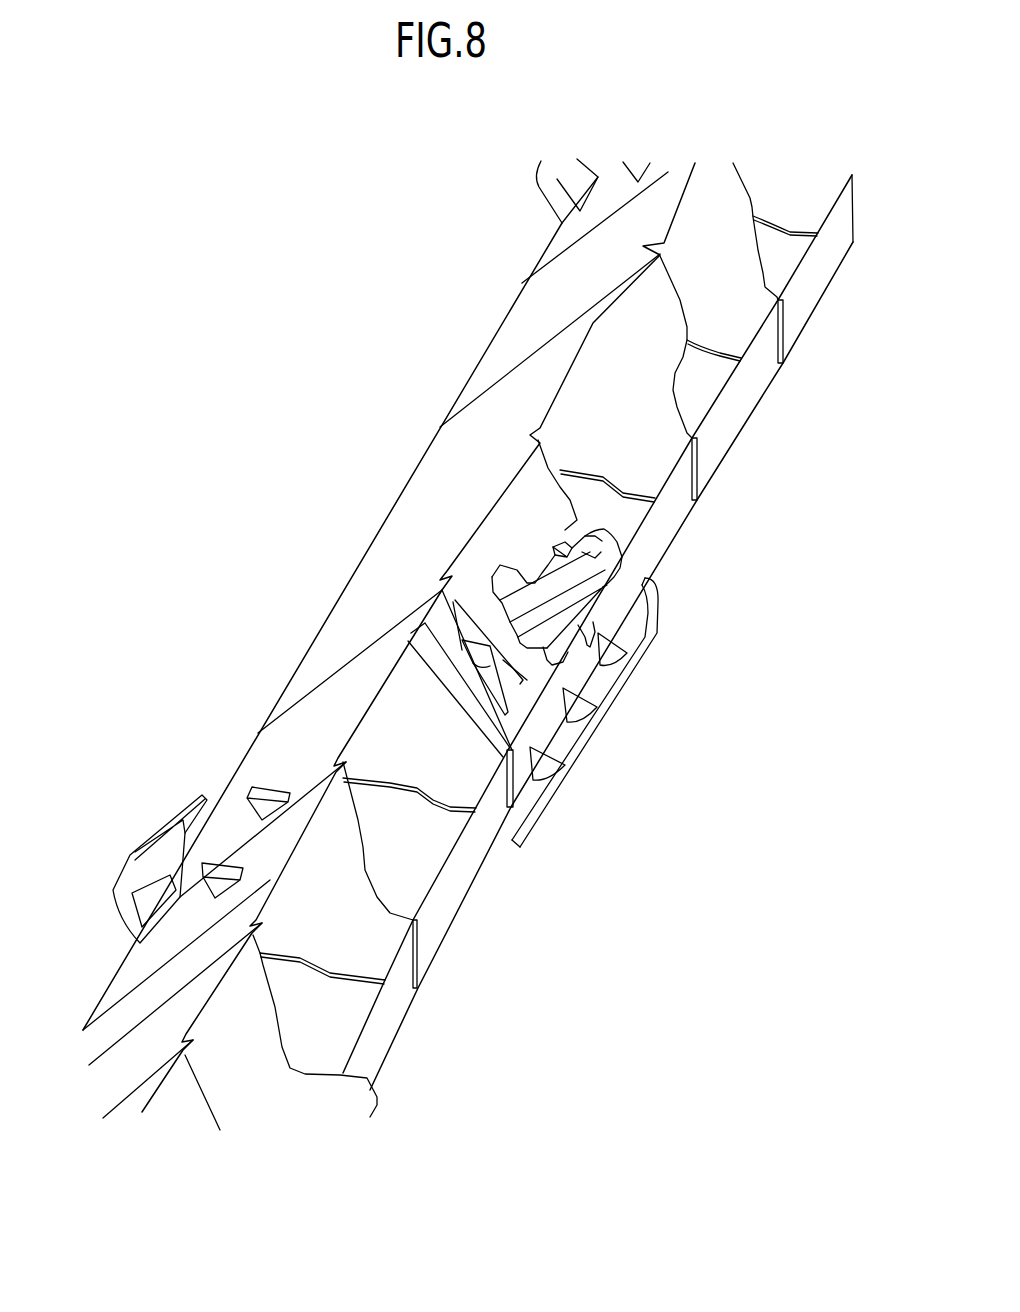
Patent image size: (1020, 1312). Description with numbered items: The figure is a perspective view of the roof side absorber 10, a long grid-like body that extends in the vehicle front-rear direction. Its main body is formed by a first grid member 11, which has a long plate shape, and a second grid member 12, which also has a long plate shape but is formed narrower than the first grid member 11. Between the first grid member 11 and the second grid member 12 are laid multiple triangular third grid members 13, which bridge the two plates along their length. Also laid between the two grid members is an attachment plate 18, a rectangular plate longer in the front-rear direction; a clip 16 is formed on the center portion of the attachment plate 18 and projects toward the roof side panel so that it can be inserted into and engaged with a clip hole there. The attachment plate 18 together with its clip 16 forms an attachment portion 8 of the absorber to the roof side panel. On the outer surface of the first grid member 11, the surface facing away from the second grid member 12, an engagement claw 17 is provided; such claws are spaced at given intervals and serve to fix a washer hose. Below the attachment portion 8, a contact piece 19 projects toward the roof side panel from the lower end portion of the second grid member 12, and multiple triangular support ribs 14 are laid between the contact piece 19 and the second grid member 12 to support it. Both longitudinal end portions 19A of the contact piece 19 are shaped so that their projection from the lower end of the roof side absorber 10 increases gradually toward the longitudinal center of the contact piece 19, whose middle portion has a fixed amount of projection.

The attachment portion 8 is at (458, 560).
The roof side absorber 10 is at (247, 379).
The first grid member 11 is at (357, 620).
The second grid member 12 is at (453, 863).
The third grid member 13 is at (725, 267).
The support rib 14 is at (610, 650).
The clip 16 is at (627, 540).
The engagement claw 17 is at (120, 816).
The attachment plate 18 is at (482, 545).
The contact piece 19 is at (630, 687).
The longitudinal end portion of contact piece 19A is at (633, 617).